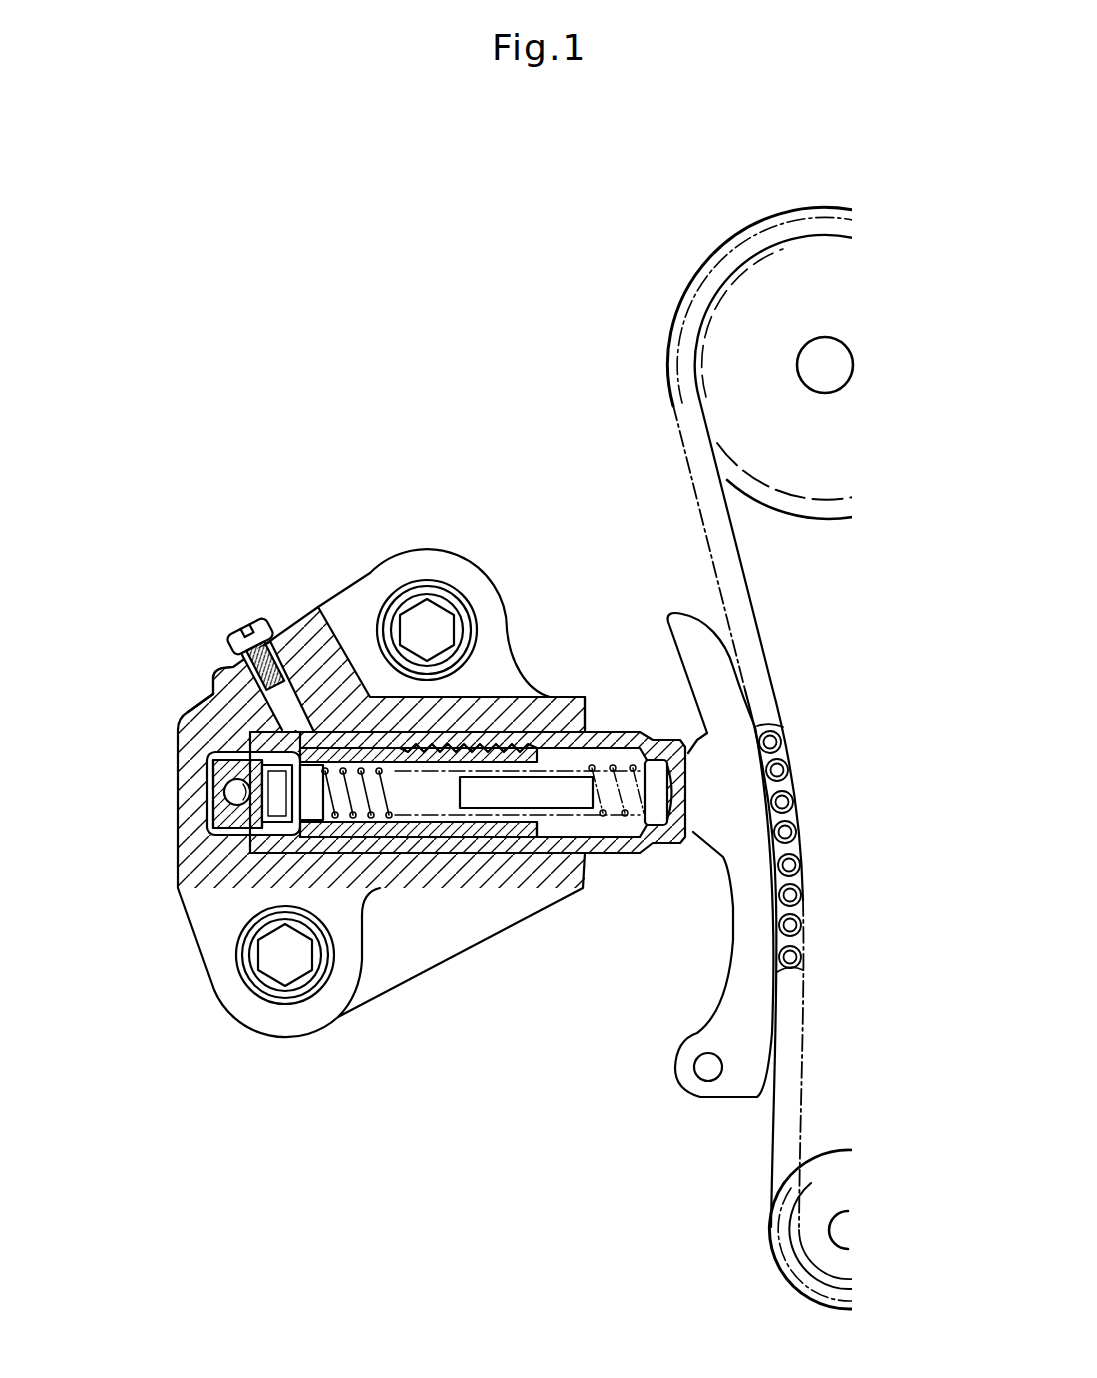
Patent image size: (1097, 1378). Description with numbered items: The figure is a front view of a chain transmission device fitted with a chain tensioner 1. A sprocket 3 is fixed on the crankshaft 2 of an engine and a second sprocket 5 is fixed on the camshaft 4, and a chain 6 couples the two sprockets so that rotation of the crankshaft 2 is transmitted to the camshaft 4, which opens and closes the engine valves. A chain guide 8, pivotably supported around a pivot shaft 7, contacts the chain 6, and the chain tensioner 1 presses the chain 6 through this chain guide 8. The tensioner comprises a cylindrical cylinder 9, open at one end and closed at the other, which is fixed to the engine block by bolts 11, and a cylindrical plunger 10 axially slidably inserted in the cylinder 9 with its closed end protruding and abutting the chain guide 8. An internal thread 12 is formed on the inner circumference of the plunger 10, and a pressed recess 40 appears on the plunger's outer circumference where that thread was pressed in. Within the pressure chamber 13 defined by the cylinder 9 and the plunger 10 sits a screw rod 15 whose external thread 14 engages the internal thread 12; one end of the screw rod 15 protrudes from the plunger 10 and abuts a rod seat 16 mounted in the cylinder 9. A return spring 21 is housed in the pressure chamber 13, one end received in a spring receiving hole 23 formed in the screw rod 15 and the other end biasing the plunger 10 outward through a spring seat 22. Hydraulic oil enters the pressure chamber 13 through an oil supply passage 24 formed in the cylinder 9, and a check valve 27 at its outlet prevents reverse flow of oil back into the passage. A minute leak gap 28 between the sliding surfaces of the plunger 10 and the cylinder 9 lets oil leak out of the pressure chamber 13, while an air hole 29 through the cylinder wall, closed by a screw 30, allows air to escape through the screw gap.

The chain tensioner 1 is at (168, 736).
The crankshaft 2 is at (830, 1230).
The sprocket 3 is at (793, 1275).
The camshaft 4 is at (822, 367).
The sprocket 5 is at (747, 250).
The chain 6 is at (794, 830).
The pivot shaft 7 is at (705, 1067).
The chain guide 8 is at (674, 608).
The cylinder 9 is at (573, 697).
The plunger 10 is at (628, 732).
The bolts 11 is at (425, 592).
The internal thread 12 is at (432, 837).
The pressure chamber 13 is at (357, 742).
The external thread 14 is at (384, 825).
The screw rod 15 is at (490, 830).
The rod seat 16 is at (250, 850).
The return spring 21 is at (600, 816).
The spring seat 22 is at (655, 825).
The spring receiving hole 23 is at (356, 800).
The oil supply passage 24 is at (212, 822).
The check valve 27 is at (236, 795).
The leak gap 28 is at (550, 855).
The air hole 29 is at (236, 692).
The screw 30 is at (258, 622).
The pressed recess 40 is at (432, 733).